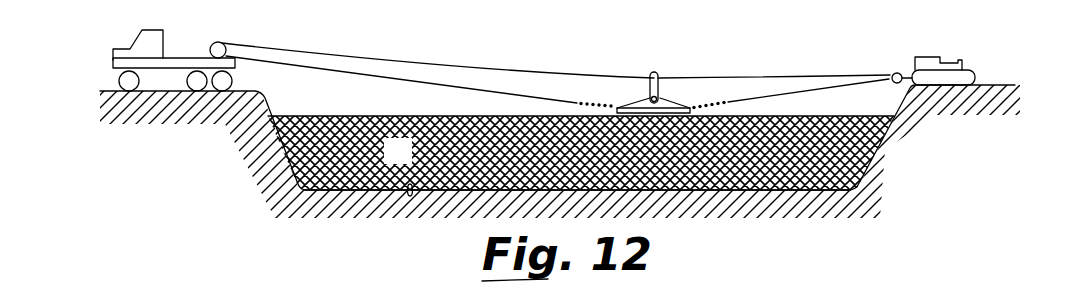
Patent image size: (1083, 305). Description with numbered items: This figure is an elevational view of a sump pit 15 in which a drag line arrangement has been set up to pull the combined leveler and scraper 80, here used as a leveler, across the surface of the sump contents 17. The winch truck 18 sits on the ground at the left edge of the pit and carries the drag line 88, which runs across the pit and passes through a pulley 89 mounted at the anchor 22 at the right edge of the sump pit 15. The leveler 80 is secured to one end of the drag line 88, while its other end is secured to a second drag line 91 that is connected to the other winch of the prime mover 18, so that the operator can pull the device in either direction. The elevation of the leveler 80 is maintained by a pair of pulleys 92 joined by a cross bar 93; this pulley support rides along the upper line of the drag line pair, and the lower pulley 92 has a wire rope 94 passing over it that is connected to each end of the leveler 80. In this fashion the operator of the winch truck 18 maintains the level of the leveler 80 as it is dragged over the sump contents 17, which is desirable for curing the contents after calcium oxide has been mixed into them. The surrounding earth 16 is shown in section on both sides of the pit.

The sump pit 15 is at (410, 198).
The ground 16 is at (220, 128).
The sump contents 17 is at (414, 167).
The winch truck 18 is at (165, 42).
The anchor 22 is at (940, 60).
The combined leveler and scraper 80 is at (672, 114).
The drag line 88 is at (482, 66).
The pulley 89 is at (893, 74).
The drag line 91 is at (364, 74).
The pulleys 92 is at (658, 73).
The cross bar 93 is at (650, 92).
The wire rope 94 is at (610, 102).